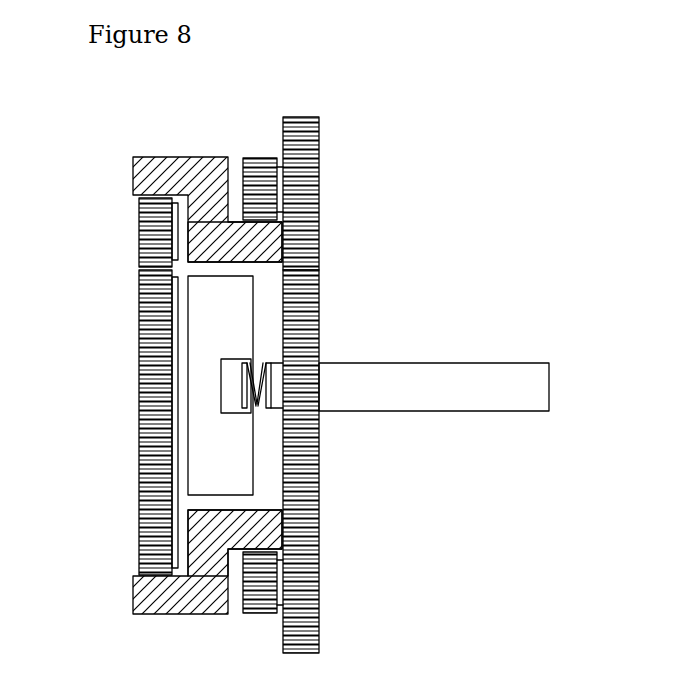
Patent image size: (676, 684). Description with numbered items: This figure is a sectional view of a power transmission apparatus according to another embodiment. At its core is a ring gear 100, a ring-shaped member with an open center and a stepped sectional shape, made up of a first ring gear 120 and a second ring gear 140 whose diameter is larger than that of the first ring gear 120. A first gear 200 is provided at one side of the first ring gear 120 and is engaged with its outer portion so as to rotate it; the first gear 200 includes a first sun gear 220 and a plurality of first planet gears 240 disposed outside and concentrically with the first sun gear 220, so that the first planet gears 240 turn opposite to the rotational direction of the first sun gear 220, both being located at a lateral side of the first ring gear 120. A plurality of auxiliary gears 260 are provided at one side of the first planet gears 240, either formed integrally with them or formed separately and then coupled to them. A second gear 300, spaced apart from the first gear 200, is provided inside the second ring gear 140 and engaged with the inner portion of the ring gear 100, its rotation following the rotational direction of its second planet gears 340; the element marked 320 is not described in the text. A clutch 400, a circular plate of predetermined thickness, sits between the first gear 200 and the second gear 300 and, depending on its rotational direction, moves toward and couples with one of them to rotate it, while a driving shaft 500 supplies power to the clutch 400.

The ring gear 100 is at (207, 345).
The first ring gear 120 is at (260, 237).
The second ring gear 140 is at (178, 170).
The first gear 200 is at (343, 385).
The first sun gear 220 is at (335, 461).
The first planet gears 240 is at (305, 232).
The auxiliary gears 260 is at (265, 192).
The second gear 300 is at (95, 386).
The lower coil 320 is at (148, 295).
The second planet gears 340 is at (148, 222).
The clutch 400 is at (235, 455).
The driving shaft 500 is at (501, 372).